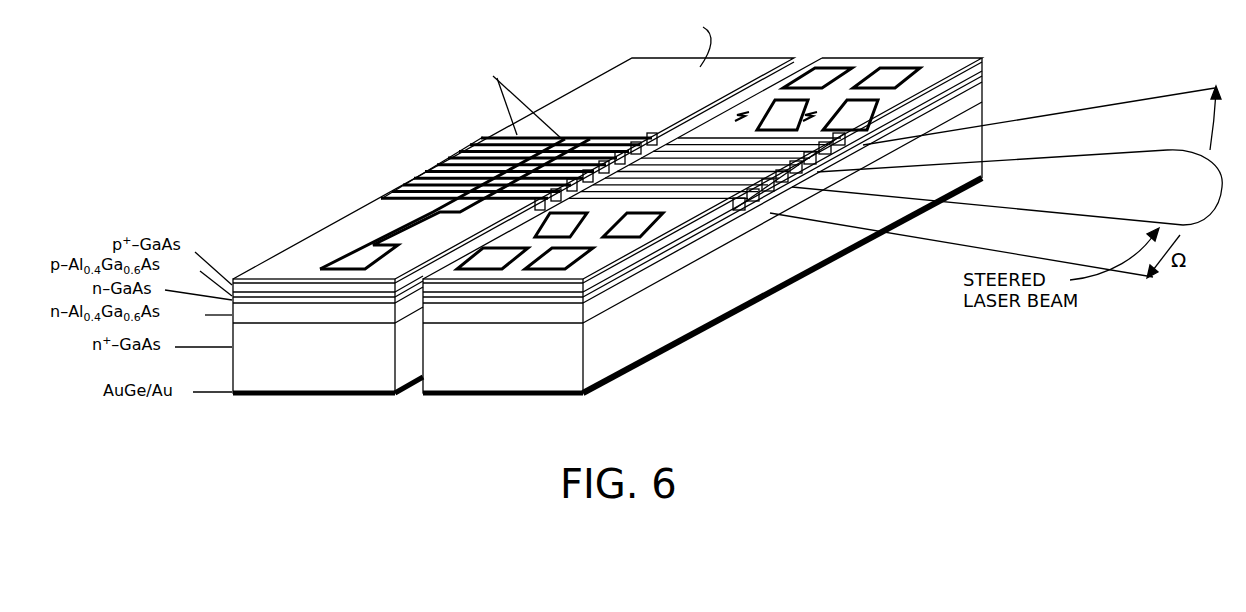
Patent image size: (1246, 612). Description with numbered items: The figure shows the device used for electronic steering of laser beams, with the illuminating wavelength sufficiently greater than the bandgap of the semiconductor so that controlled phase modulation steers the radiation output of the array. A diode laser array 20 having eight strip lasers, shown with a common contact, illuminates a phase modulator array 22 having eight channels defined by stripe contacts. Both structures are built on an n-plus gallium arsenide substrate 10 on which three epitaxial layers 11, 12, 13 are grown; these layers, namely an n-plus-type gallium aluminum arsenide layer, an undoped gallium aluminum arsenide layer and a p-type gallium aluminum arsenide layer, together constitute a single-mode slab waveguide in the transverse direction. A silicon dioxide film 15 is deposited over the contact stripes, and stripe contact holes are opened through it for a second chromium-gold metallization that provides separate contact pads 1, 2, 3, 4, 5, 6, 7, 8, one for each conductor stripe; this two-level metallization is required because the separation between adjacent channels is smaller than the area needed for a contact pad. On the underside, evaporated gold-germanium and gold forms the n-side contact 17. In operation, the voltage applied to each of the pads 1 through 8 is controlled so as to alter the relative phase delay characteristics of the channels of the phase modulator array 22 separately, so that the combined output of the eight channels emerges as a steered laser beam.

The contact pad 1 is at (633, 226).
The contact pad 2 is at (559, 258).
The contact pad 3 is at (561, 226).
The contact pad 4 is at (492, 258).
The contact pad 5 is at (840, 115).
The contact pad 6 is at (886, 79).
The contact pad 7 is at (771, 115).
The contact pad 8 is at (817, 79).
The n+-GaAs substrate 10 is at (526, 378).
The epitaxial layer 11 is at (972, 96).
The epitaxial layer 12 is at (978, 79).
The epitaxial layer 13 is at (980, 61).
The SiO2 film 15 is at (884, 58).
The n-side contact 17 is at (626, 378).
The diode laser array 20 is at (410, 165).
The phase modulator array 22 is at (704, 231).